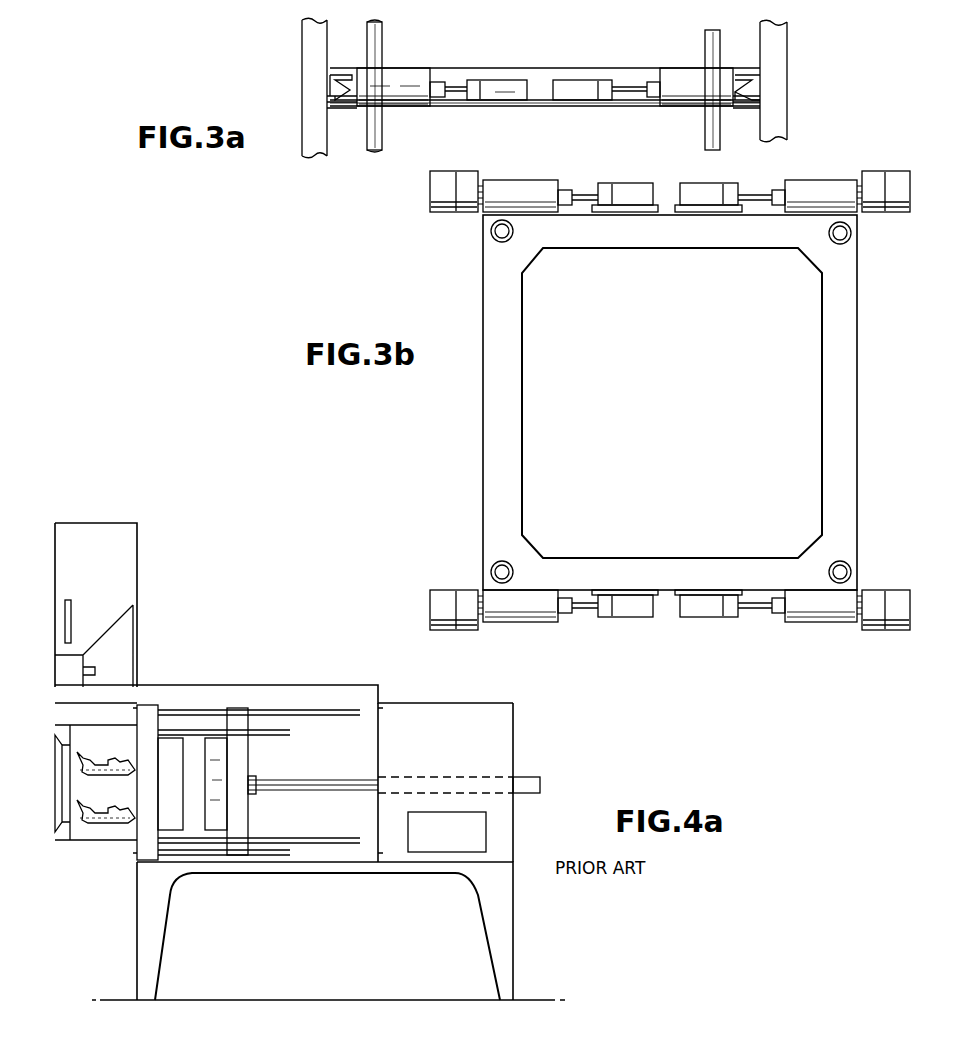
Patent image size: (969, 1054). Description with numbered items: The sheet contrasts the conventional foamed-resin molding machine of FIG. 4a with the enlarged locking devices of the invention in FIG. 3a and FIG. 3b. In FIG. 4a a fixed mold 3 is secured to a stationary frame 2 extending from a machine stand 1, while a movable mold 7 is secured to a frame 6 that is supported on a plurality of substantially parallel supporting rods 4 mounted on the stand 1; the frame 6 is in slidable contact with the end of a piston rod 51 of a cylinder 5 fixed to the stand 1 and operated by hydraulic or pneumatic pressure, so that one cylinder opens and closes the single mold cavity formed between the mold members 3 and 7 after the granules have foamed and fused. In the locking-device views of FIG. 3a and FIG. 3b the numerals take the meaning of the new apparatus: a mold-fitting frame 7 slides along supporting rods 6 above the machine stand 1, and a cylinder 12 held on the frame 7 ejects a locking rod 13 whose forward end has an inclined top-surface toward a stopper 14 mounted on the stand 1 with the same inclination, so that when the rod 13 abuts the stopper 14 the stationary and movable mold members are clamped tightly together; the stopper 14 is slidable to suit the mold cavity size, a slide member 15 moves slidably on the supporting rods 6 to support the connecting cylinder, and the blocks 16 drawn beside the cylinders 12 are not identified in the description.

In FIG. 3a, the machine stand 1 is at (302, 112).
In FIG. 3b, the machine stand 1 is at (436, 213).
In FIG. 4a, the machine stand 1 is at (270, 870).
In FIG. 4a, the stationary frame 2 is at (140, 820).
In FIG. 4a, the fixed mold 3 is at (175, 725).
In FIG. 4a, the supporting rods 4 is at (325, 690).
In FIG. 4a, the cylinder 5 is at (538, 788).
In FIG. 4a, the piston rod 51 is at (340, 792).
In FIG. 3a, the supporting rods 6 is at (378, 40).
In FIG. 3b, the supporting rods 6 is at (503, 243).
In FIG. 4a, the supporting rods 6 is at (235, 722).
In FIG. 3a, the mold-fitting frame 7 is at (535, 68).
In FIG. 3b, the mold-fitting frame 7 is at (483, 400).
In FIG. 4a, the mold-fitting frame 7 is at (200, 725).
In FIG. 3a, the cylinder 12 is at (505, 101).
In FIG. 3b, the cylinder 12 is at (633, 183).
In FIG. 3a, the locking rod 13 is at (440, 83).
In FIG. 3b, the locking rod 13 is at (565, 190).
In FIG. 3a, the stopper 14 is at (338, 110).
In FIG. 3b, the stopper 14 is at (466, 213).
In FIG. 3a, the slide member 15 is at (590, 101).
In FIG. 3b, the slide member 15 is at (690, 183).
In FIG. 3a, the clamping block 16 is at (415, 72).
In FIG. 3b, the clamping block 16 is at (528, 181).